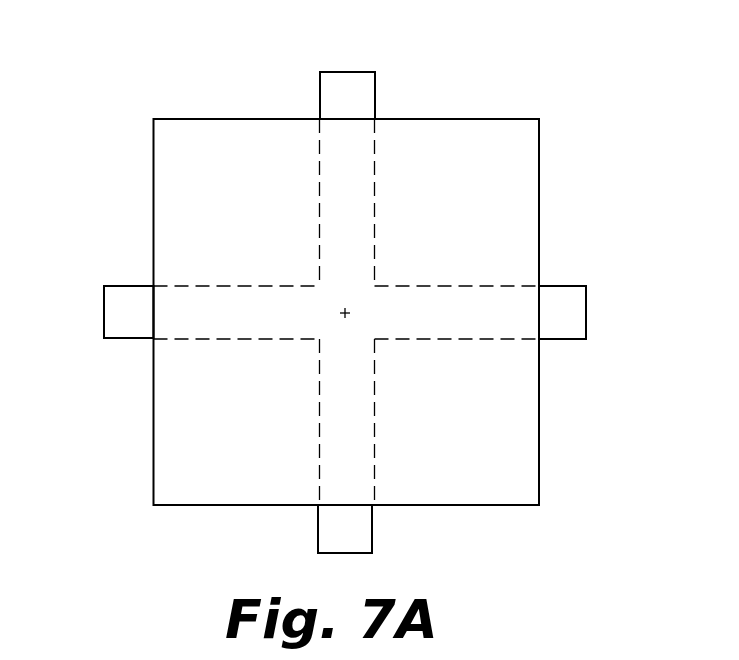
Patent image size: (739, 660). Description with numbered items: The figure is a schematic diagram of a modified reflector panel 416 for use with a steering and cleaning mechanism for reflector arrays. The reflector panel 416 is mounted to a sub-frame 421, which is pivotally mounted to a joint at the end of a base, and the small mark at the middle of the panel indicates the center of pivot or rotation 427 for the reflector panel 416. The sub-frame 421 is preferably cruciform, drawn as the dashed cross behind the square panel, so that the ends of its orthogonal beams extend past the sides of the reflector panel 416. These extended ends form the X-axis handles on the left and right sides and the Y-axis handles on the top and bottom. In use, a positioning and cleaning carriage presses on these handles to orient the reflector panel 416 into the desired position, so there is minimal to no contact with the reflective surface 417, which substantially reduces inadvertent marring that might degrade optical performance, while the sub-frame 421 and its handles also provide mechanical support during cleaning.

The reflector panel 416 is at (157, 91).
The reflective surface 417 is at (483, 441).
The sub-frame 421 is at (397, 251).
The center of pivot or rotation 427 is at (342, 310).